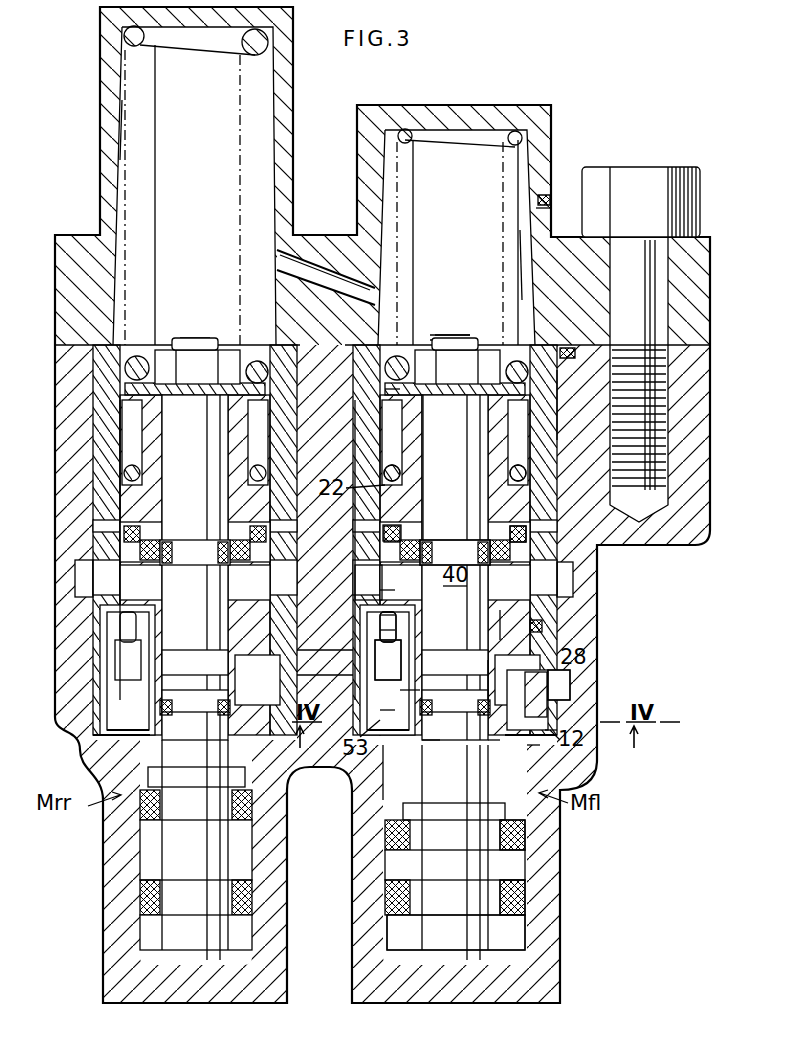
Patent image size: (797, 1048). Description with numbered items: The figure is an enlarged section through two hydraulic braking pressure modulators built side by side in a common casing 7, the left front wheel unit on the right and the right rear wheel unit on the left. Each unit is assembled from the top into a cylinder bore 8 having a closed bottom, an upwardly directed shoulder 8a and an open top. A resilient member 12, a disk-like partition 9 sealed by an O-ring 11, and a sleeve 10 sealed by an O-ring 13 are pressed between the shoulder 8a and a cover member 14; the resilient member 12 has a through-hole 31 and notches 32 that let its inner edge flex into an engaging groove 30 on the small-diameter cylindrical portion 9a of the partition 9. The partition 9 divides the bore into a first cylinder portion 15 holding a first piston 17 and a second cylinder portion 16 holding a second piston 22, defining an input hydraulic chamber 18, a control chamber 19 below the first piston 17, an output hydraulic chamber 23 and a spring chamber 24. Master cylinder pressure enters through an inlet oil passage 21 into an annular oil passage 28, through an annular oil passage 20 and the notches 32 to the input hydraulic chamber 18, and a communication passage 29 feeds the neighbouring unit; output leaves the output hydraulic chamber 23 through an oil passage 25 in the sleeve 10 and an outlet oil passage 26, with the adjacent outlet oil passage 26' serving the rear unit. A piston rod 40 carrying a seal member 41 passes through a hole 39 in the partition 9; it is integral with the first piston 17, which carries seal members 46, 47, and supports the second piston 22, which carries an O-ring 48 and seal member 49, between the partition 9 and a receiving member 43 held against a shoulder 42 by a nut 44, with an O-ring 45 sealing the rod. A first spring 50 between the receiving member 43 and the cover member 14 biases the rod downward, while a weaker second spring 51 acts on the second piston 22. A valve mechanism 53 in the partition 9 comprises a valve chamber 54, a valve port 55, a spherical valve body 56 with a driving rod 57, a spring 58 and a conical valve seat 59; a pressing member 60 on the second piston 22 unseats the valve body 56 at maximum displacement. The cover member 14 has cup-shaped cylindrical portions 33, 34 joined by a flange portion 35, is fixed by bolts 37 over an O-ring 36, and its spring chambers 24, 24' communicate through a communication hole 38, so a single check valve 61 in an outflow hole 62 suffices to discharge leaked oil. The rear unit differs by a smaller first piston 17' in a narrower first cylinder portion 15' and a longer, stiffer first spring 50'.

The casing 7 is at (597, 660).
The cylinder bore 8 is at (553, 431).
The shoulder 8a is at (548, 730).
The partition 9 is at (516, 634).
The small-diameter cylindrical portion 9a is at (479, 748).
The sleeve 10 is at (556, 397).
The O-ring 11 is at (545, 630).
The resilient member 12 is at (110, 730).
The O-ring 13 is at (530, 540).
The cover member 14 is at (546, 100).
The first cylinder portion 15 is at (436, 900).
The first cylinder portion 15' is at (92, 900).
The second cylinder portion 16 is at (360, 458).
The first piston 17 is at (488, 852).
The first piston 17' is at (157, 850).
The input hydraulic chamber 18 is at (395, 790).
The control chamber 19 is at (462, 958).
The annular oil passage 20 is at (538, 687).
The inlet oil passage 21 is at (572, 690).
The second piston 22 is at (120, 485).
The output hydraulic chamber 23 is at (380, 562).
The spring chamber 24 is at (455, 240).
The spring chamber 24' is at (195, 195).
The oil passage 25 is at (575, 578).
The outlet oil passage 26 is at (602, 590).
The outlet oil passage 26' is at (53, 578).
The annular oil passage 28 is at (325, 657).
The communication passage 29 is at (325, 681).
The engaging groove 30 is at (473, 680).
The through-hole 31 is at (395, 772).
The notches 32 is at (518, 730).
The cylindrical portion 33 is at (362, 162).
The cylindrical portion 34 is at (288, 90).
The flange portion 35 is at (322, 240).
The O-ring 36 is at (566, 348).
The bolts 37 is at (650, 172).
The communication hole 38 is at (322, 275).
The hole 39 is at (433, 751).
The piston rod 40 is at (203, 482).
The seal member 41 is at (455, 712).
The shoulder 42 is at (454, 467).
The receiving member 43 is at (386, 393).
The nut 44 is at (425, 355).
The O-ring 45 is at (440, 560).
The seal member 46 is at (520, 838).
The seal member 47 is at (522, 896).
The O-ring 48 is at (530, 508).
The seal member 49 is at (396, 532).
The first spring 50 is at (540, 265).
The first spring 50' is at (88, 130).
The second spring 51 is at (395, 450).
The valve mechanism 53 is at (158, 684).
The valve chamber 54 is at (408, 694).
The valve port 55 is at (398, 612).
The valve body 56 is at (380, 630).
The driving rod 57 is at (380, 615).
The spring 58 is at (380, 710).
The valve seat 59 is at (405, 662).
The pressing member 60 is at (380, 590).
The check valve 61 is at (545, 210).
The outflow hole 62 is at (550, 197).